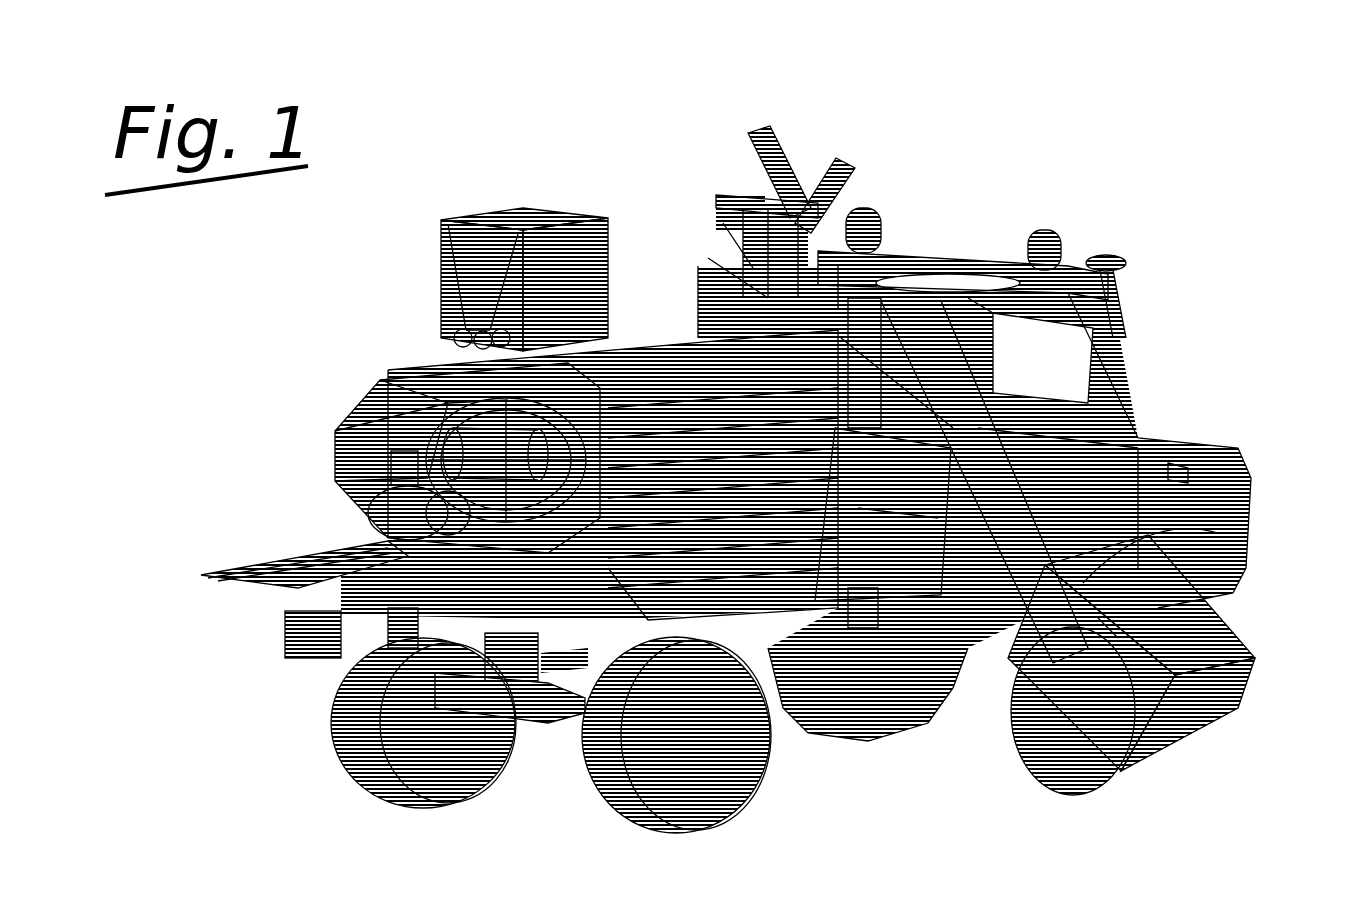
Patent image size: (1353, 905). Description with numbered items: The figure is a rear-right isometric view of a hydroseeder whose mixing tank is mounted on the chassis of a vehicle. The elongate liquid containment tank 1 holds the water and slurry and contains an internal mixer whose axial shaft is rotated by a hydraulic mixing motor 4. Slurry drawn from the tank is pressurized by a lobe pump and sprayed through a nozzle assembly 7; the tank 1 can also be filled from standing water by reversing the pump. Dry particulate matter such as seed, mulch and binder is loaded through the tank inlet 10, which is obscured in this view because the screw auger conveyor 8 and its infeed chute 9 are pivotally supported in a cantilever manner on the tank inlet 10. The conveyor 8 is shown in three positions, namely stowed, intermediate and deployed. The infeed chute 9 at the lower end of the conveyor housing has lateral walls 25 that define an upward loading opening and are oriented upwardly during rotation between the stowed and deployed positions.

The liquid containment tank 1 is at (343, 403).
The hydraulic mixing motor 4 is at (370, 530).
The nozzle assembly 7 is at (851, 150).
The conveyor 8 is at (1153, 413).
The infeed chute 9 is at (1243, 633).
The tank inlet 10 is at (817, 378).
The lateral walls 25 is at (584, 266).